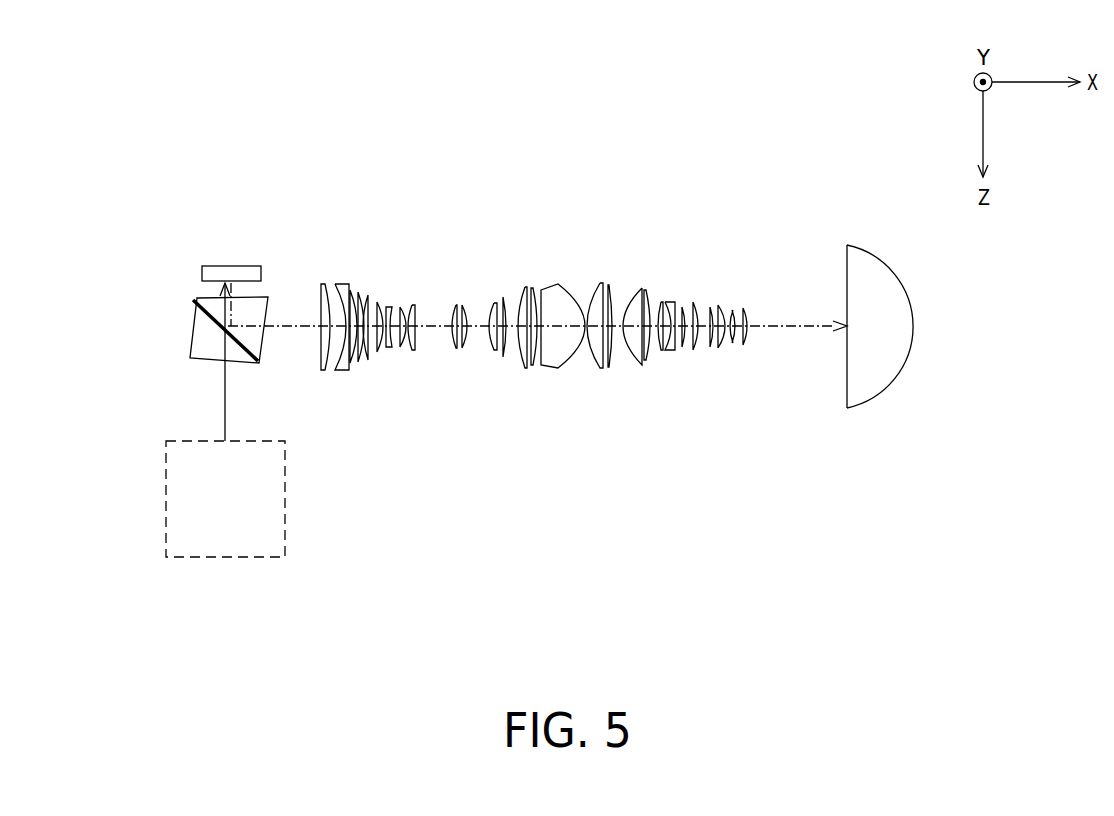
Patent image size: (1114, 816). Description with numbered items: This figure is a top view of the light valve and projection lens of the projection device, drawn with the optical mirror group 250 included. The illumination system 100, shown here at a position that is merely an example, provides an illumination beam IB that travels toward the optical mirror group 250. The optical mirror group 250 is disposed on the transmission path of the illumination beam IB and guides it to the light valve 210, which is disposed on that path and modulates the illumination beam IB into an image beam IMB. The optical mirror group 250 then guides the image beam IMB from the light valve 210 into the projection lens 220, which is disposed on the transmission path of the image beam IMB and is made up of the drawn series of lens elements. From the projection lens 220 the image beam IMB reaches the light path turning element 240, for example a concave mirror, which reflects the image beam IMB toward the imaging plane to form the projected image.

The illumination system 100 is at (223, 533).
The light valve 210 is at (230, 265).
The projection lens 220 is at (748, 388).
The light path turning element 240 is at (847, 392).
The optical mirror group 250 is at (202, 333).
The illumination beam IB is at (225, 392).
The image beam IMB is at (293, 322).